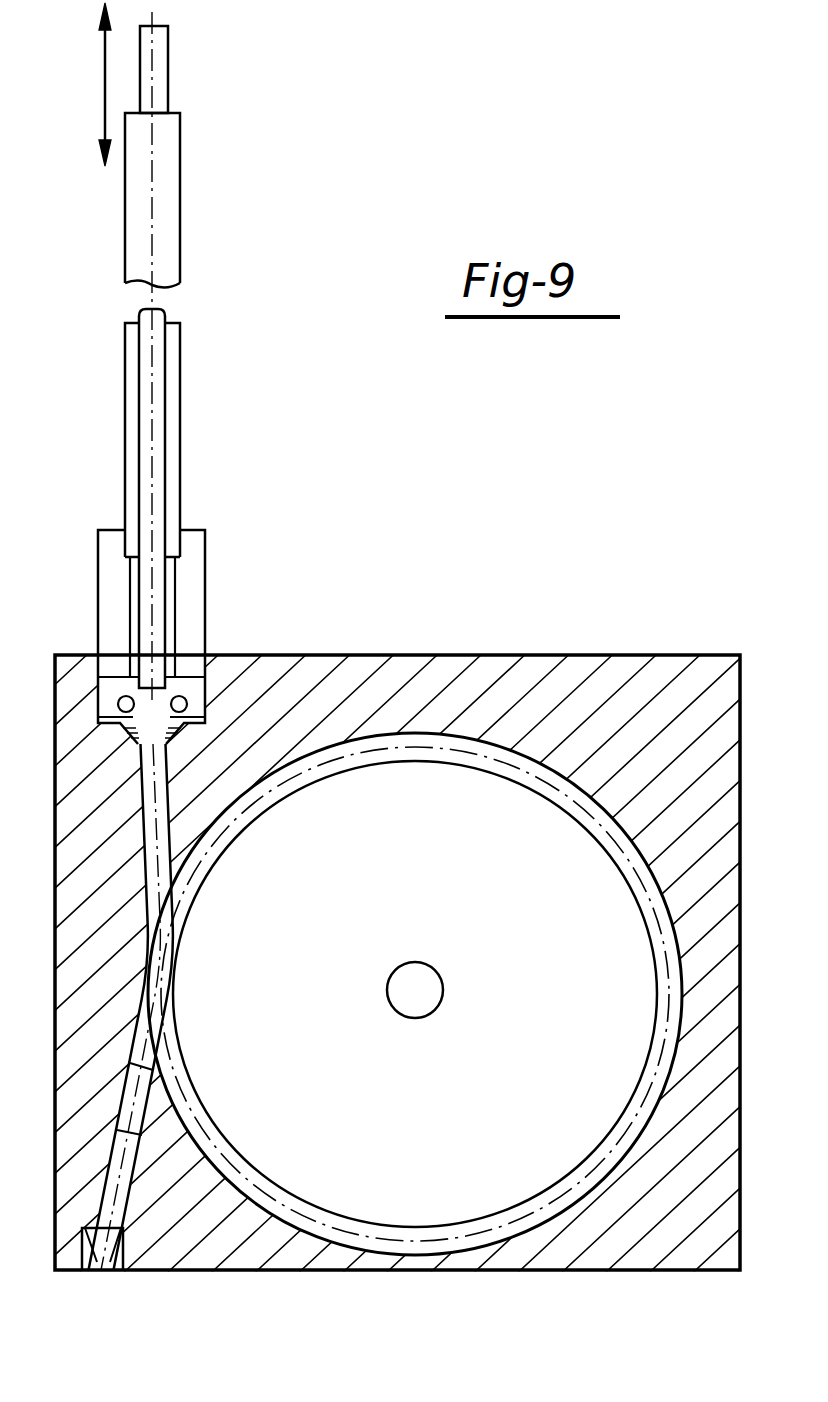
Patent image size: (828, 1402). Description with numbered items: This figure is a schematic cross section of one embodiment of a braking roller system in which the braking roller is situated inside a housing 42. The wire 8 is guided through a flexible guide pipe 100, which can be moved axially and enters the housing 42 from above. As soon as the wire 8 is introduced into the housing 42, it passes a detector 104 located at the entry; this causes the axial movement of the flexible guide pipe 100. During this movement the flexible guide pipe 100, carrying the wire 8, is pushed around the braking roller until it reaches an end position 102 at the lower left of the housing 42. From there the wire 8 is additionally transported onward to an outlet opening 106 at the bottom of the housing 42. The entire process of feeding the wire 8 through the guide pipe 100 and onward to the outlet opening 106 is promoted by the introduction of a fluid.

The wire 8 is at (155, 22).
The flexible guide pipe 100 is at (158, 97).
The detector 104 is at (188, 702).
The housing 42 is at (570, 677).
The end position 102 is at (118, 1130).
The outlet opening 106 is at (112, 1270).